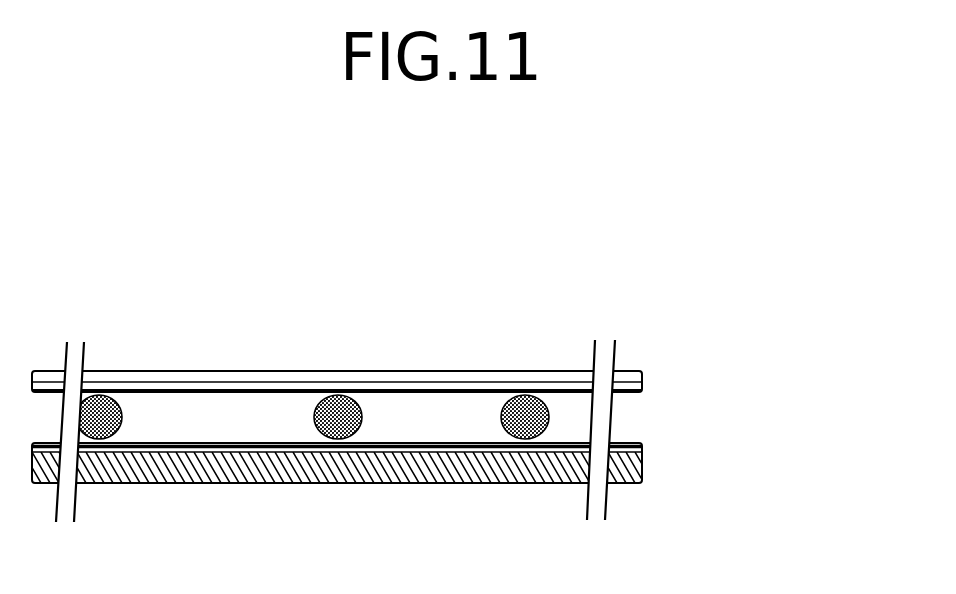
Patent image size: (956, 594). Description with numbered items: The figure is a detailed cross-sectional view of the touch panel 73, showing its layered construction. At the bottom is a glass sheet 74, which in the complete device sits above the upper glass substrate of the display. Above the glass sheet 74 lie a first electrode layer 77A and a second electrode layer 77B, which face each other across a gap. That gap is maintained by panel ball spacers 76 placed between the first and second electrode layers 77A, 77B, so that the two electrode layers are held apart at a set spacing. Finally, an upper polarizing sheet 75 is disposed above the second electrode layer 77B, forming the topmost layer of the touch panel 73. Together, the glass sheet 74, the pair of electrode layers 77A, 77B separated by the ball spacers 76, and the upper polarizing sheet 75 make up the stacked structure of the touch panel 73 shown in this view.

The touch panel 73 is at (360, 349).
The glass sheet 74 is at (645, 465).
The upper polarizing sheet 75 is at (645, 372).
The panel ball spacers 76 is at (548, 411).
The first electrode layer 77A is at (645, 446).
The second electrode layer 77B is at (645, 383).